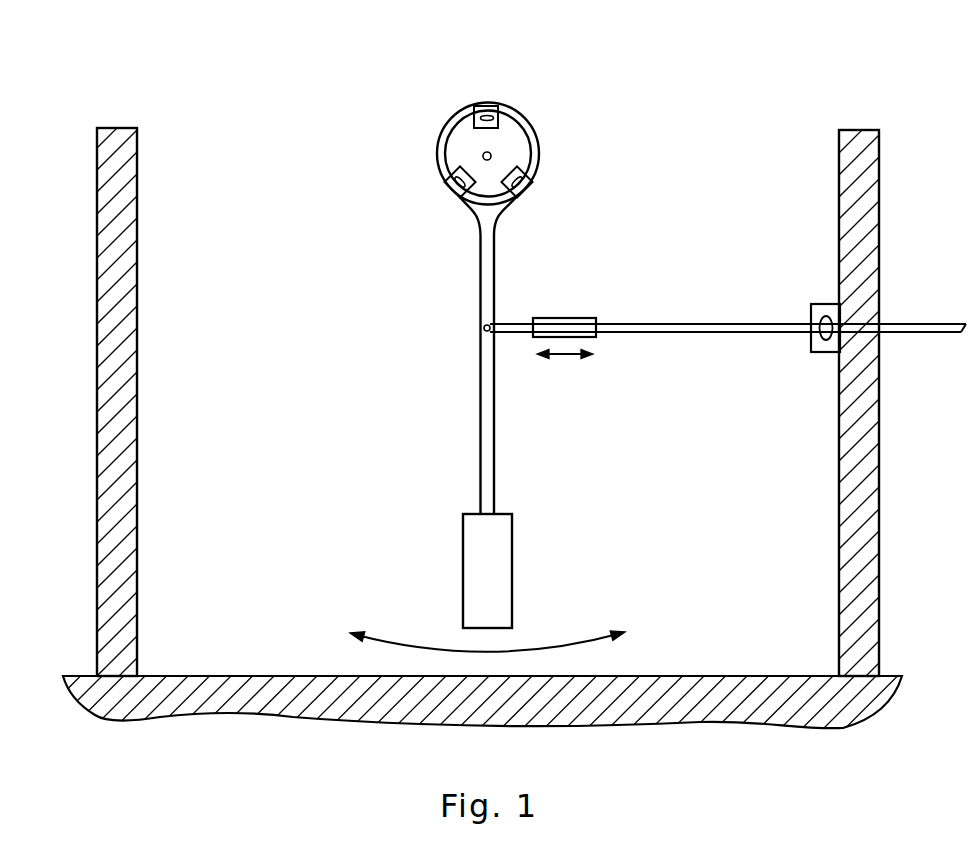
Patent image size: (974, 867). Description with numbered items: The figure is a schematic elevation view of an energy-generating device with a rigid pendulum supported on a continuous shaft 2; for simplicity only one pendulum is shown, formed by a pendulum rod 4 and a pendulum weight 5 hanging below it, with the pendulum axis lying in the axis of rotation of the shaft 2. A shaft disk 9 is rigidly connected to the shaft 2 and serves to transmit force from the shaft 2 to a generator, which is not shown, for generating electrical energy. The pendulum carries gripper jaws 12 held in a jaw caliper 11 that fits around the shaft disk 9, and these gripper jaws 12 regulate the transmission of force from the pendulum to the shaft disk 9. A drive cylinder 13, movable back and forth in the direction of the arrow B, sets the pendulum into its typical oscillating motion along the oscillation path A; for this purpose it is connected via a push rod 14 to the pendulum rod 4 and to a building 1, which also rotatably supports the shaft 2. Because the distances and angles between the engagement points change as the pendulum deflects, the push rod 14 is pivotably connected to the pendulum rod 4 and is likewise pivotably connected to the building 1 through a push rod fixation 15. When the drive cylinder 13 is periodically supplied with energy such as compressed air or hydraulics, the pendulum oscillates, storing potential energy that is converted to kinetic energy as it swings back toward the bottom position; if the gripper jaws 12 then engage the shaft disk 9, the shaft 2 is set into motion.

The building 1 is at (125, 213).
The shaft 2 is at (492, 155).
The pendulum rod 4 is at (487, 442).
The pendulum weight 5 is at (497, 535).
The shaft disk 9 is at (513, 137).
The jaw caliper 11 is at (473, 106).
The gripper jaws 12 is at (489, 115).
The drive cylinder 13 is at (567, 327).
The push rod 14 is at (652, 328).
The push rod fixation 15 is at (812, 317).
The oscillation path A is at (487, 624).
The direction of movement of drive cylinder B is at (565, 372).